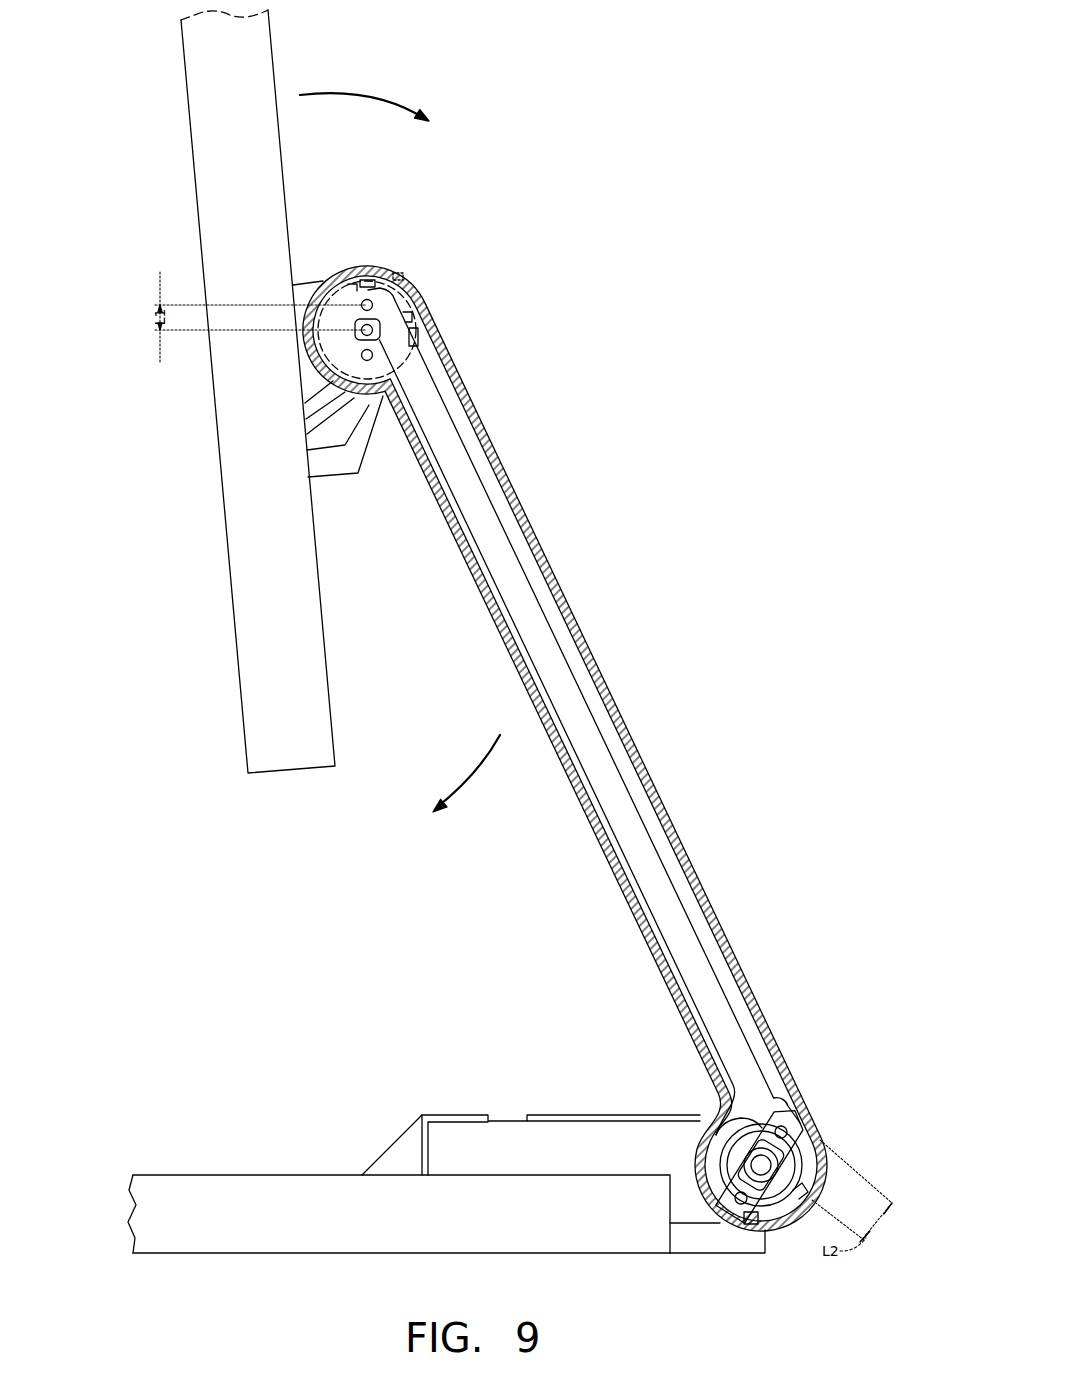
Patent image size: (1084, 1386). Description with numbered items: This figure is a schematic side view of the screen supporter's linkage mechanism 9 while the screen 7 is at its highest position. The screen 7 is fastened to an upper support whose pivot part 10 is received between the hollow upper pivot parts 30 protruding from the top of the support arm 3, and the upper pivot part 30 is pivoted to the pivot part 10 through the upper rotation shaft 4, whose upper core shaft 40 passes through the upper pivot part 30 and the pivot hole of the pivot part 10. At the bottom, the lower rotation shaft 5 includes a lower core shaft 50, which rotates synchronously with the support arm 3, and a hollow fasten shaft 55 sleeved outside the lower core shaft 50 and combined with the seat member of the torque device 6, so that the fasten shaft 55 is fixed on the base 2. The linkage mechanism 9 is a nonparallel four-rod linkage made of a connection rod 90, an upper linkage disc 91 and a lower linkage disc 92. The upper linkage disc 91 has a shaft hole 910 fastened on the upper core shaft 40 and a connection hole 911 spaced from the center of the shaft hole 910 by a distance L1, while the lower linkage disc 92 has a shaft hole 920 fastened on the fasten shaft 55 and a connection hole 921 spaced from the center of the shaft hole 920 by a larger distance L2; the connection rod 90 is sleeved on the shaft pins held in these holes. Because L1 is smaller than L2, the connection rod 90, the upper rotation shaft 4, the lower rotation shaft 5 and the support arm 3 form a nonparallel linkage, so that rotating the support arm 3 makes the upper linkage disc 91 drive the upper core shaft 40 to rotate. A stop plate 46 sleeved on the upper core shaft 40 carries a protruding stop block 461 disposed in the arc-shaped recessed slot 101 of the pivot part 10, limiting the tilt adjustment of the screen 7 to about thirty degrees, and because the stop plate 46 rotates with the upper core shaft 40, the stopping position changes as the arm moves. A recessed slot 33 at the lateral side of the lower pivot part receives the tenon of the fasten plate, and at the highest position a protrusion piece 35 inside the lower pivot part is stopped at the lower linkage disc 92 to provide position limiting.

The base 2 is at (245, 1195).
The support arm 3 is at (562, 592).
The upper rotation shaft 4 is at (405, 276).
The lower rotation shaft 5 is at (806, 1147).
The torque device 6 is at (436, 1106).
The screen 7 is at (215, 168).
The linkage mechanism 9 is at (576, 680).
The pivot part 10 is at (346, 462).
The upper pivot part 30 is at (405, 293).
The recessed slot 33 is at (780, 1218).
The protrusion piece 35 is at (752, 1226).
The upper core shaft 40 is at (385, 338).
The stop plate 46 is at (356, 277).
The lower core shaft 50 is at (748, 1158).
The fasten shaft 55 is at (716, 1226).
The connection rod 90 is at (451, 455).
The upper linkage disc 91 is at (347, 367).
The lower linkage disc 92 is at (725, 1142).
The arc-shaped recessed slot 101 is at (406, 316).
The stop block 461 is at (418, 337).
The shaft hole 910 is at (357, 332).
The connection hole 911 is at (373, 282).
The shaft hole 920 is at (745, 1123).
The connection hole 921 is at (786, 1128).